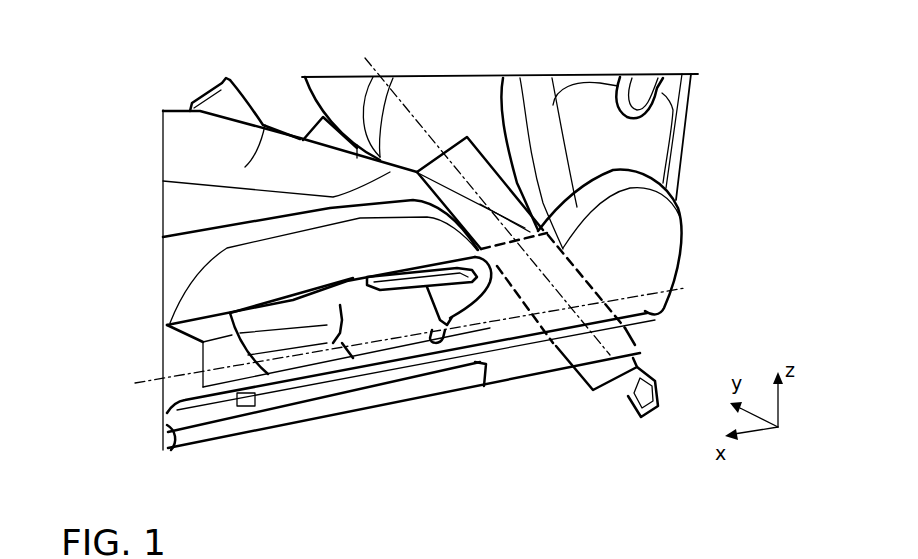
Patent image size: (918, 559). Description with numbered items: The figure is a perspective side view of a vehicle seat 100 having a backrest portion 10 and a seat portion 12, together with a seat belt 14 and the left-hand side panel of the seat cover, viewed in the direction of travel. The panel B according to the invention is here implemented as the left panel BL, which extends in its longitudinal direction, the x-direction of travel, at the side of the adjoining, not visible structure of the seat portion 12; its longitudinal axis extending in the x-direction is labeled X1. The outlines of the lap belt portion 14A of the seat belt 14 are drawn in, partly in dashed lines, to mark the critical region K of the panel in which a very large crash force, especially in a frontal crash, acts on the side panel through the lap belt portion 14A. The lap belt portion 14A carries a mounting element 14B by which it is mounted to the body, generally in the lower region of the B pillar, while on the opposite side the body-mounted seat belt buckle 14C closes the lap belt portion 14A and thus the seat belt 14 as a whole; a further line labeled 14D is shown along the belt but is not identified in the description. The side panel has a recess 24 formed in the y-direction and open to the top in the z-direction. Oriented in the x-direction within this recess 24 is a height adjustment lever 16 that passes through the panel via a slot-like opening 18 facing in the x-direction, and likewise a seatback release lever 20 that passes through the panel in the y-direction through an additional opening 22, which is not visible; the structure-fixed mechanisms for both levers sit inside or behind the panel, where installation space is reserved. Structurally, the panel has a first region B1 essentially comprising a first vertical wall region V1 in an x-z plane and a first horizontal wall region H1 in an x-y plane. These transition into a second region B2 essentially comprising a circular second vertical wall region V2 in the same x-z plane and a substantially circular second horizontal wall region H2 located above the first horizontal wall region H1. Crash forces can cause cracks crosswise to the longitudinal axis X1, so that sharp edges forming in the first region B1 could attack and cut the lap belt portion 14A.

The vehicle seat 100 is at (686, 55).
The backrest portion 10 is at (660, 118).
The seat portion 12 is at (177, 192).
The seat belt 14 is at (390, 251).
The lap belt portion 14A is at (468, 160).
The mounting element 14B is at (620, 400).
The seat belt buckle 14C is at (213, 97).
The belt center line 14D is at (469, 193).
The height adjustment lever 16 is at (405, 292).
The slot-like opening 18 is at (438, 334).
The seatback release lever 20 is at (295, 305).
The additional opening 22 is at (343, 312).
The recess 24 is at (373, 332).
The first horizontal wall region H1 is at (475, 255).
The second horizontal wall region H2 is at (608, 183).
The first vertical wall region V1 is at (487, 331).
The second vertical wall region V2 is at (638, 246).
The first region B1 is at (580, 295).
The second region B2 is at (663, 262).
The panel B is at (712, 292).
The left panel BL is at (672, 280).
The critical region K is at (575, 338).
The longitudinal axis X1 is at (391, 343).